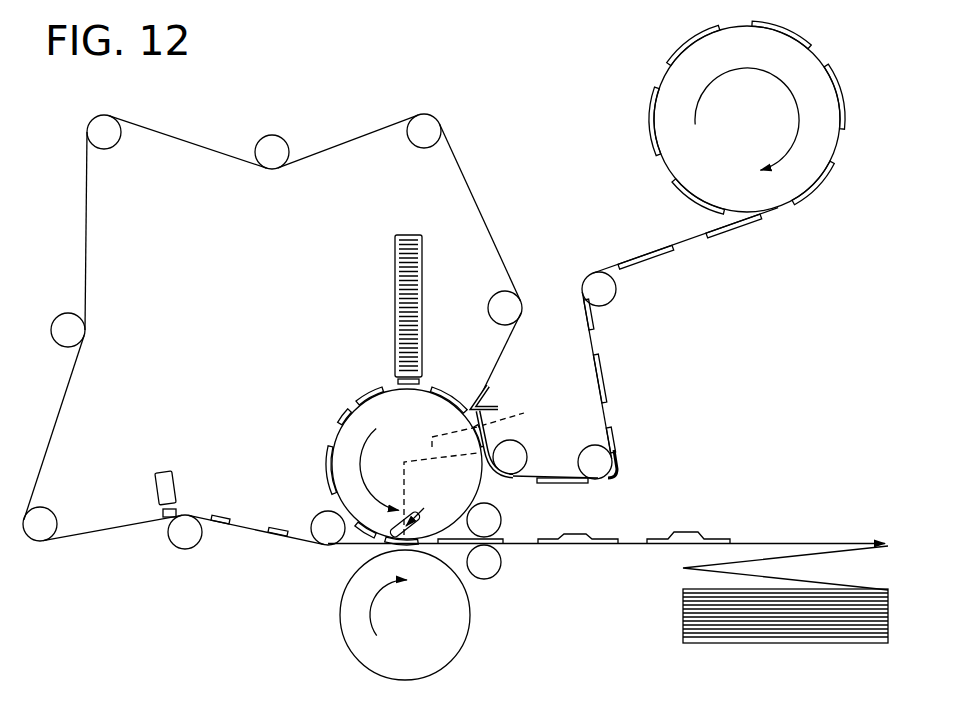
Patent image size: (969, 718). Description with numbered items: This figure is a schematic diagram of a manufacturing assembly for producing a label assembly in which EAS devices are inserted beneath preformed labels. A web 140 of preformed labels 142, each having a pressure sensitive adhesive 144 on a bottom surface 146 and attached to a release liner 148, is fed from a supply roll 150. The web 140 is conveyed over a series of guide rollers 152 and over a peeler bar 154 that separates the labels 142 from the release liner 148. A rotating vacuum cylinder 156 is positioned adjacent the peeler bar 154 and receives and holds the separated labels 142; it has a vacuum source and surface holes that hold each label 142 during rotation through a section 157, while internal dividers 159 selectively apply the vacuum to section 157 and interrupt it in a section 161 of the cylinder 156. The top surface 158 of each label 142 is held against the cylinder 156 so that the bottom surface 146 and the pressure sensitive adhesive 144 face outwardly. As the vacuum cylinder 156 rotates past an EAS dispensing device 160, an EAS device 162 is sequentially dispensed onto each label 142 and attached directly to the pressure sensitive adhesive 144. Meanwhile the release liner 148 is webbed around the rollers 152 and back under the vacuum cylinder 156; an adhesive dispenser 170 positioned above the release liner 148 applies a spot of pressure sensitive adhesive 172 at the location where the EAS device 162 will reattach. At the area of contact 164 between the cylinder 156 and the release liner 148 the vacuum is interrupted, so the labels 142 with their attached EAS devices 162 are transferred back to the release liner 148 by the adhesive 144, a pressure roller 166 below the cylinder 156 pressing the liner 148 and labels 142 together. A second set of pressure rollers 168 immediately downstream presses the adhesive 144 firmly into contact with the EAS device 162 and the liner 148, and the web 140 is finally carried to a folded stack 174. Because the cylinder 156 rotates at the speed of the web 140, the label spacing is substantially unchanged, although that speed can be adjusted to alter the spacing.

The web 140 is at (648, 59).
The preformed label 142 is at (438, 390).
The pressure sensitive adhesive 144 is at (340, 418).
The bottom surface 146 is at (342, 430).
The release liner 148 is at (688, 245).
The supply roll 150 is at (660, 99).
The guide rollers 152 is at (418, 124).
The peeler bar 154 is at (492, 396).
The vacuum cylinder 156 is at (488, 484).
The section 157 is at (429, 419).
The top surface 158 is at (334, 452).
The internal dividers 159 is at (503, 419).
The EAS dispensing device 160 is at (386, 275).
The section 161 is at (460, 481).
The EAS device 162 is at (384, 390).
The area of contact 164 is at (383, 540).
The pressure roller 166 is at (457, 637).
The second set of pressure rollers 168 is at (500, 525).
The adhesive dispenser 170 is at (158, 470).
The spot of pressure sensitive adhesive 172 is at (268, 528).
The folded stack 174 is at (680, 620).